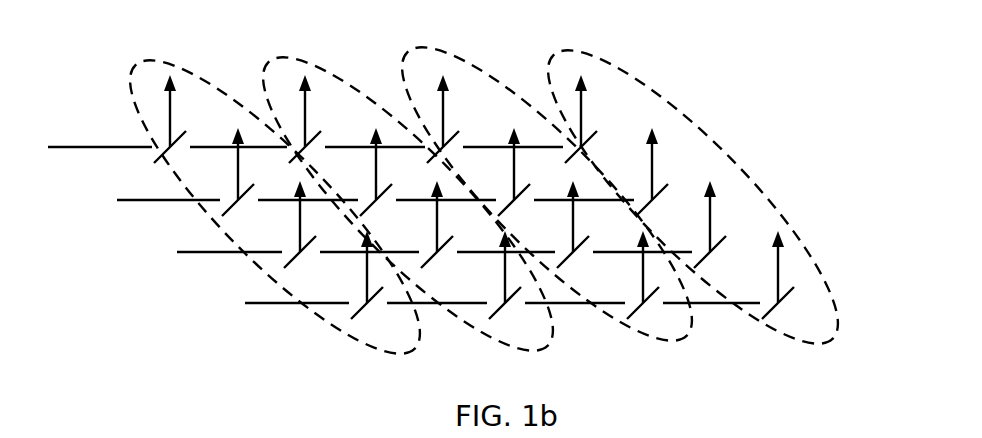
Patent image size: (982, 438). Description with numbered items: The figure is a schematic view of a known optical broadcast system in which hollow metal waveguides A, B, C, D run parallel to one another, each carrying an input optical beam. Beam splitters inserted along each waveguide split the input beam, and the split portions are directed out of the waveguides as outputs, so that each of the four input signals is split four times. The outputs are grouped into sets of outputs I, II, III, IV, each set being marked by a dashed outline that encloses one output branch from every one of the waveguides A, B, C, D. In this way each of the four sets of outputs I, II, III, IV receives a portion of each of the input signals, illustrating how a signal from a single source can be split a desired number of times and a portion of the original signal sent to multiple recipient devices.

The hollow metal waveguide A is at (314, 119).
The hollow metal waveguide B is at (381, 172).
The hollow metal waveguide C is at (440, 224).
The hollow metal waveguide D is at (508, 275).
The set of outputs I is at (275, 204).
The set of outputs II is at (408, 202).
The set of outputs III is at (547, 193).
The set of outputs IV is at (693, 196).